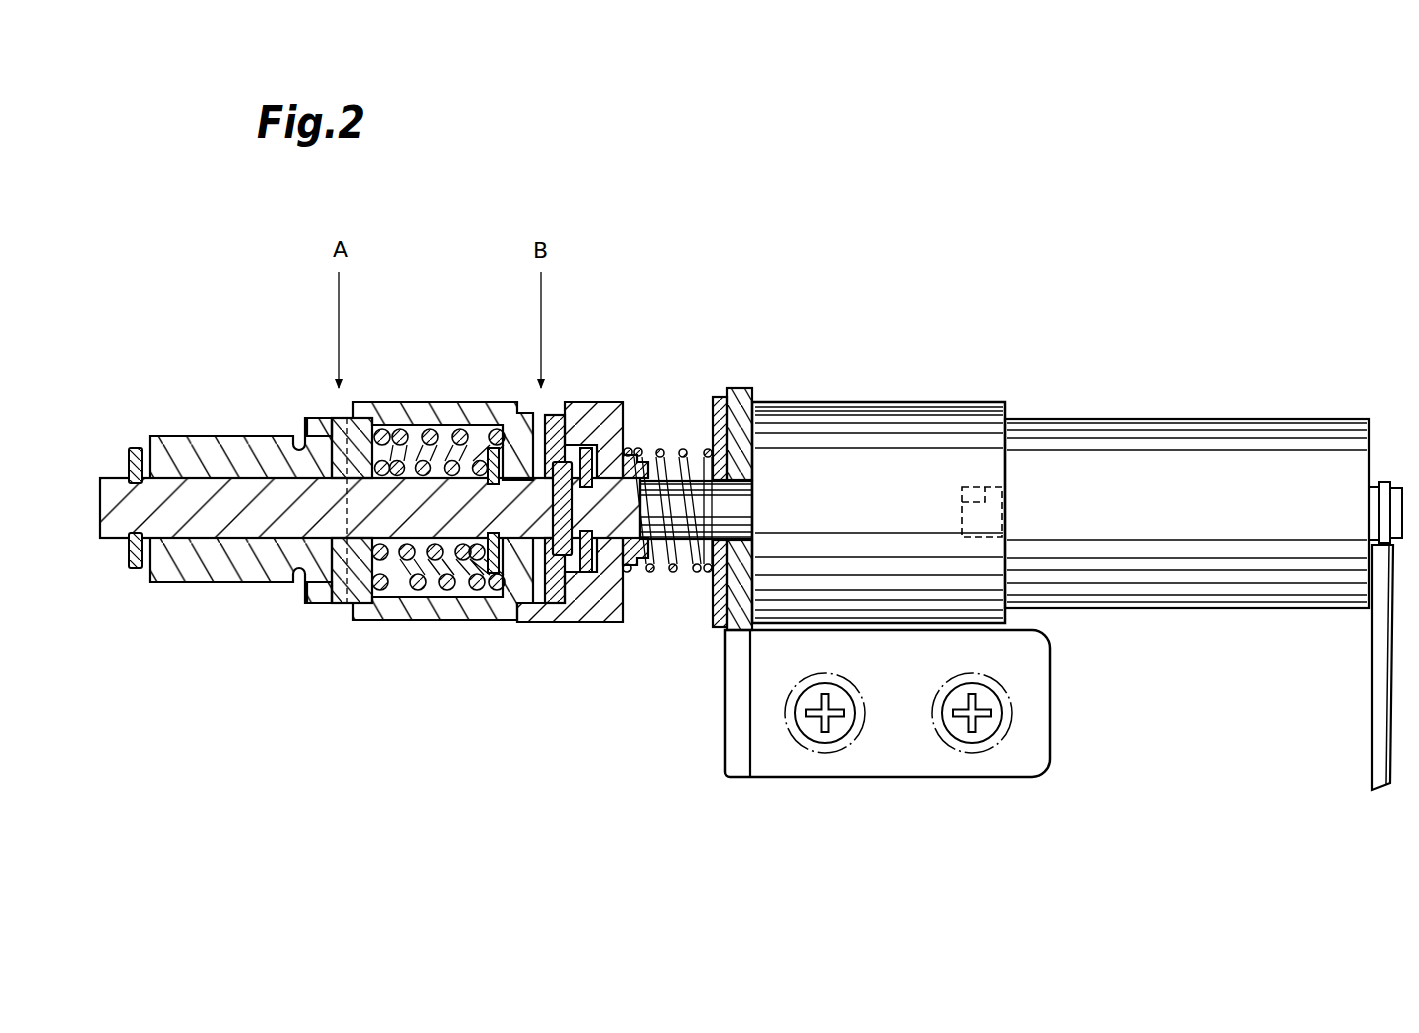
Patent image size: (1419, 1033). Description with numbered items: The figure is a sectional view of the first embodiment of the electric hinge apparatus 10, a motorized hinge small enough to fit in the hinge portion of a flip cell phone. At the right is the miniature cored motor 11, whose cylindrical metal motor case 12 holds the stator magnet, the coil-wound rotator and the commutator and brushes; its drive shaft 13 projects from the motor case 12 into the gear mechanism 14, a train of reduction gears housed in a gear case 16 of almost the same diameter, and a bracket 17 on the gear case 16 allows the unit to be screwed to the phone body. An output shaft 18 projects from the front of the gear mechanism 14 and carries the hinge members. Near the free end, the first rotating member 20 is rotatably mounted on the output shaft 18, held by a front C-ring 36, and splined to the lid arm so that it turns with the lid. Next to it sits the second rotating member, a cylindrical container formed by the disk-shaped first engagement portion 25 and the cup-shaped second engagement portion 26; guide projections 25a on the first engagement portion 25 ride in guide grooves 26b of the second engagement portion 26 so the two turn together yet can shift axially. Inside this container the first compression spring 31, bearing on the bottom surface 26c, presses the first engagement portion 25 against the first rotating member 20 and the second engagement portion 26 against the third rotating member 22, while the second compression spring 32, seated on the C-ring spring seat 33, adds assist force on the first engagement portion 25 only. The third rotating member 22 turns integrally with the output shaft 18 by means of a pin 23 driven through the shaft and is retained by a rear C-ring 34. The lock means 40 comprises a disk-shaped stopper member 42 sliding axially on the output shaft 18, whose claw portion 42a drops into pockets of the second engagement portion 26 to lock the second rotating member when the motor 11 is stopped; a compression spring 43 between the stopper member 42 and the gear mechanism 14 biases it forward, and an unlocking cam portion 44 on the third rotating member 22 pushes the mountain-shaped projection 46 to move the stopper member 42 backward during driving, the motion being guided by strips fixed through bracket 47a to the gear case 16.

The electric hinge apparatus 10 is at (1198, 340).
The motor 11 is at (1133, 414).
The motor case 12 is at (1193, 418).
The drive shaft 13 is at (990, 487).
The gear mechanism 14 is at (838, 398).
The gear case 16 is at (890, 402).
The bracket 17 is at (1027, 707).
The output shaft 18 is at (245, 498).
The first rotating member 20 is at (222, 582).
The third rotating member 22 is at (553, 412).
The pin 23 is at (558, 560).
The first engagement portion 25 is at (355, 605).
The guide projections 25a is at (360, 412).
The second engagement portion 26 is at (455, 410).
The guide grooves 26b is at (385, 412).
The bottom surface 26c is at (513, 463).
The first compression spring 31 is at (410, 600).
The second compression spring 32 is at (460, 600).
The spring seat 33 is at (492, 575).
The rear C-ring 34 is at (598, 623).
The front C-ring 36 is at (135, 572).
The lock means 40 is at (634, 638).
The stopper member 42 is at (632, 455).
The claw portion 42a is at (545, 622).
The compression spring 43 is at (690, 452).
The unlocking cam portion 44 is at (585, 575).
The projection 46 is at (587, 410).
The bracket 47a is at (715, 628).